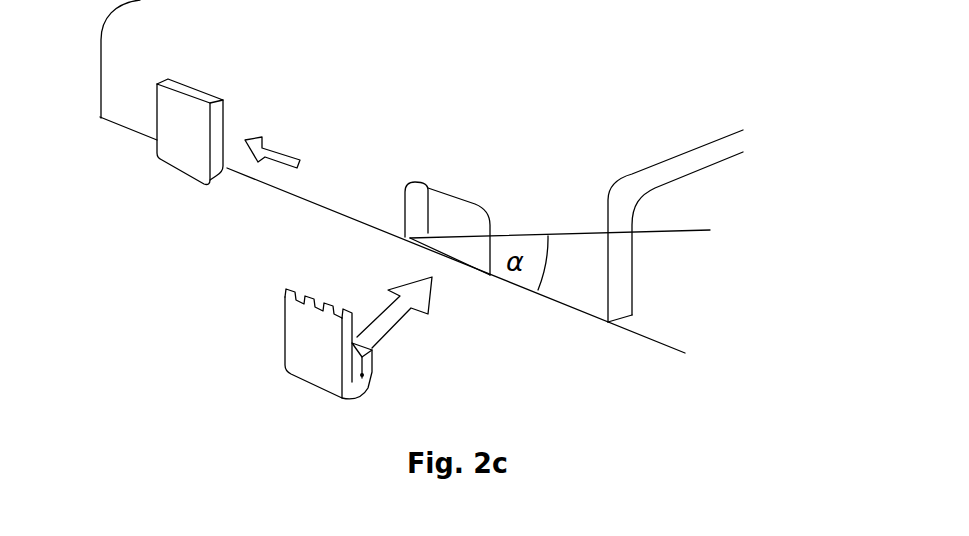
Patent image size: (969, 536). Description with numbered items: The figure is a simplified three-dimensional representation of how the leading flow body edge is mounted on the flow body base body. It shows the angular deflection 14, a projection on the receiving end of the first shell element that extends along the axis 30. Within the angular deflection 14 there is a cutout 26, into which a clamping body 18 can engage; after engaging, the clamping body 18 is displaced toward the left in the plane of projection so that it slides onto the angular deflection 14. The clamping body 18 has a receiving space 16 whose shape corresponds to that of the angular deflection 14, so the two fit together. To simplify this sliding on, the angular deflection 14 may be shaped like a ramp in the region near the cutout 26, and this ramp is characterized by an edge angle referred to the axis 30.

The angular deflection 14 is at (280, 175).
The receiving space 16 is at (364, 375).
The clamping body 18 is at (172, 103).
The cutout 26 is at (443, 210).
The axis 30 is at (653, 338).